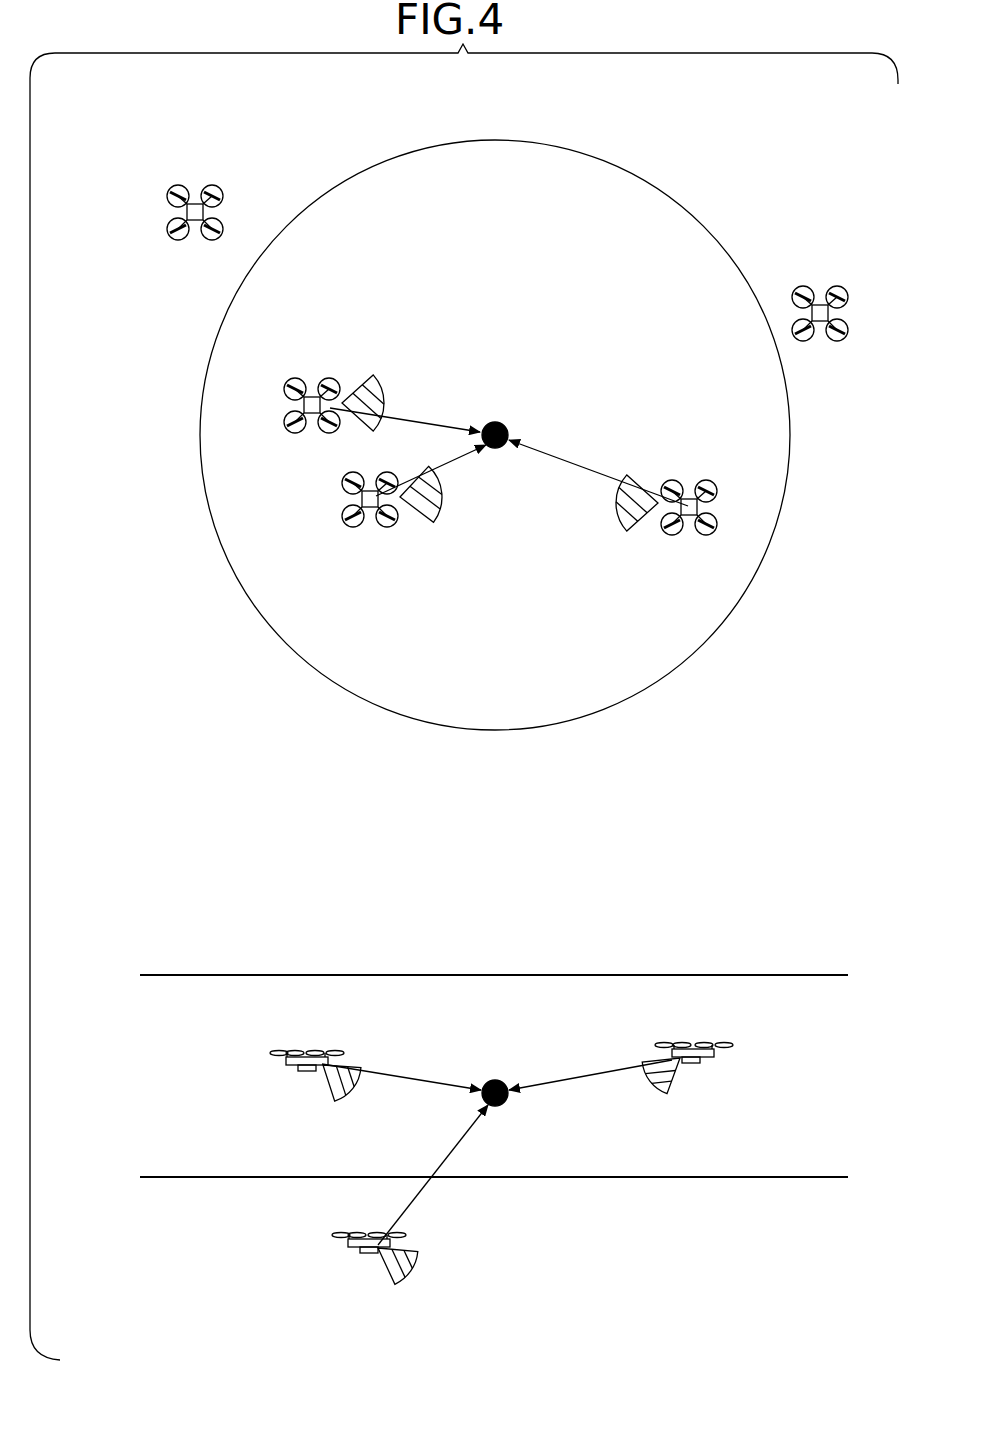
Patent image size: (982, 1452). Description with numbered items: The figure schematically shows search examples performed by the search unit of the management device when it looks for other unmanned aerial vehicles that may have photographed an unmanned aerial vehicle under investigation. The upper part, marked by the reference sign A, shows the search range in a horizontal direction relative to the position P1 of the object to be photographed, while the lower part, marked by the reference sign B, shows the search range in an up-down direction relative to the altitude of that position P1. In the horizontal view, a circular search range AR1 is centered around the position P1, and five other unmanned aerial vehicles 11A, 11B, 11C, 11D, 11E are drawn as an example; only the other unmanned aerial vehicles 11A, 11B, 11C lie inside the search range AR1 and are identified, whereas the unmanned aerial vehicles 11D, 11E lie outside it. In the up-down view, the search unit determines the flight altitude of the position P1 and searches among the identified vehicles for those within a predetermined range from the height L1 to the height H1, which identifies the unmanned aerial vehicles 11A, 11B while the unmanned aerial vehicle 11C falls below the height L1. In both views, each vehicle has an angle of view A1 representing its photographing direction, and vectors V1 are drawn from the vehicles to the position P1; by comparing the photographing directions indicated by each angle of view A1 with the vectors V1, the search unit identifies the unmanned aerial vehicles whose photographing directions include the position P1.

The search range in a horizontal direction A is at (130, 150).
The search range in an up-down direction B is at (137, 890).
The search range AR1 is at (626, 168).
The other unmanned aerial vehicle 11A is at (314, 382).
The other unmanned aerial vehicle 11B is at (686, 482).
The other unmanned aerial vehicle 11C is at (358, 478).
The other unmanned aerial vehicle 11D is at (196, 182).
The other unmanned aerial vehicle 11E is at (822, 282).
The angle of view at photographing A1 is at (378, 381).
The vector V1 is at (505, 822).
The position of the object to be photographed P1 is at (504, 425).
The height H1 is at (476, 977).
The height L1 is at (476, 1179).